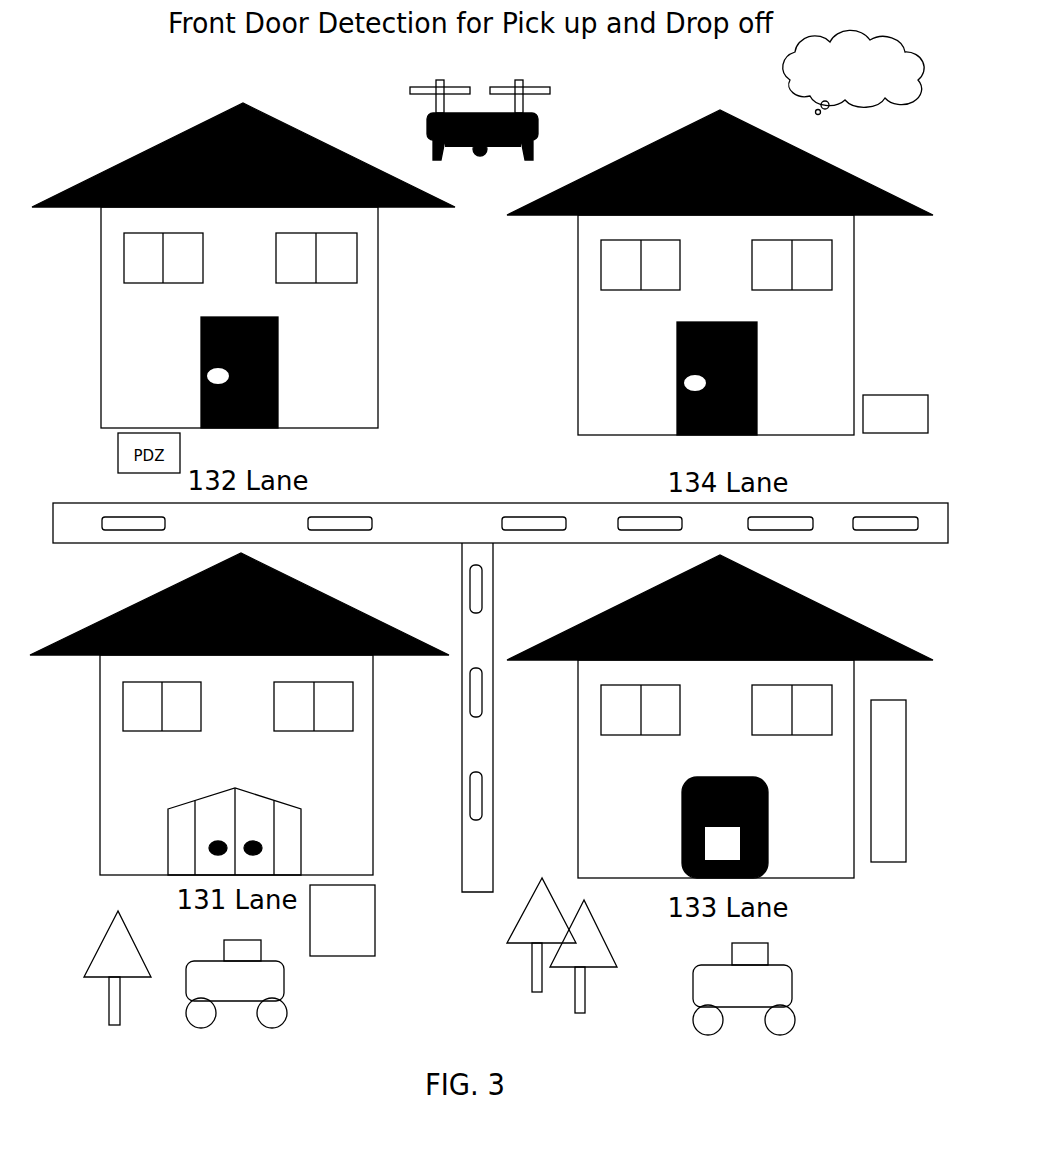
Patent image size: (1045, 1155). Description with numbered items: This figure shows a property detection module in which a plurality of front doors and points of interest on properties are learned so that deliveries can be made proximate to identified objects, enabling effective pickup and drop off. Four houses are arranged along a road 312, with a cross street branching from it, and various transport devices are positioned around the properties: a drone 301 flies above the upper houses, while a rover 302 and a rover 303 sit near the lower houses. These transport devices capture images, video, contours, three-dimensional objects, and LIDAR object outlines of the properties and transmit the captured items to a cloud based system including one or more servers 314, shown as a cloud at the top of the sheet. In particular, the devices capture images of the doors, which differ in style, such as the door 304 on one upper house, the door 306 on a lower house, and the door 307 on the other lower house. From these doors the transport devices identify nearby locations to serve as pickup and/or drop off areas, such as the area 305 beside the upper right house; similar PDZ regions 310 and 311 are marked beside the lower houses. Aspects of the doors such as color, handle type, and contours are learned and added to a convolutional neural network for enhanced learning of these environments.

The drone 301 is at (540, 127).
The rover 302 is at (792, 980).
The rover 303 is at (284, 987).
The door 304 is at (279, 376).
The pickup and/or drop off area 305 is at (878, 433).
The door 306 is at (301, 843).
The door 307 is at (770, 830).
The package delivery zone (PDZ) 310 is at (362, 933).
The package delivery zone (PDZ) 311 is at (880, 858).
The road 312 is at (535, 526).
The cloud based system including one or more servers 314 is at (831, 90).